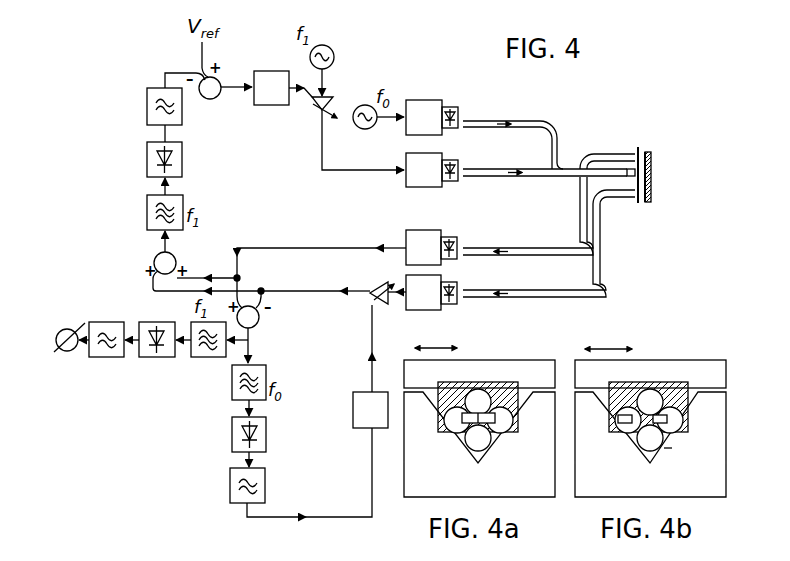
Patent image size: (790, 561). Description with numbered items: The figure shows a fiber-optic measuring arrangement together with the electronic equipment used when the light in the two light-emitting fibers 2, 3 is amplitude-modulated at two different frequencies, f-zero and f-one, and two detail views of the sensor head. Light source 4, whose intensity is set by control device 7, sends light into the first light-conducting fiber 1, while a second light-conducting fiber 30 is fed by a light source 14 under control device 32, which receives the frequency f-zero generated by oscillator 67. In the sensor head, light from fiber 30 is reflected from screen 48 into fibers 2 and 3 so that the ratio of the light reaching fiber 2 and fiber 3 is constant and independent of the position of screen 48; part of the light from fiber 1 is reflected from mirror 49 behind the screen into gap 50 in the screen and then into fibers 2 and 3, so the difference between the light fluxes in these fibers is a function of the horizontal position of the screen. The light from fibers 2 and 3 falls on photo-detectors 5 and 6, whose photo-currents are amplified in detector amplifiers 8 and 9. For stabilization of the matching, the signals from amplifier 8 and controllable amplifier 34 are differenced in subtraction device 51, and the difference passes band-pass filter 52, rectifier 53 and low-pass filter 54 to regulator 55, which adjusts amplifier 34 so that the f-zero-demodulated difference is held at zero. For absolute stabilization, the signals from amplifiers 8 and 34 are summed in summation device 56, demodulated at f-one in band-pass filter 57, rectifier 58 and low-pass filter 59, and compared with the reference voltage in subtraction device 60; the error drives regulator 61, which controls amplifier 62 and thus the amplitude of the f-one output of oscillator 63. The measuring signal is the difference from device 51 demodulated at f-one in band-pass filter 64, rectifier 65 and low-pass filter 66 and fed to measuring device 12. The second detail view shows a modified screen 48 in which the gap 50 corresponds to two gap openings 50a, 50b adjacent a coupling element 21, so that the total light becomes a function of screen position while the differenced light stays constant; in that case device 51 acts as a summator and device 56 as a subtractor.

In FIG. 4, the first light-conducting fiber 1 is at (527, 168).
In FIG. 4a, the first light-conducting fiber 1 is at (472, 450).
In FIG. 4b, the first light-conducting fiber 1 is at (645, 450).
In FIG. 4, the light-emitting fiber 2 is at (519, 247).
In FIG. 4a, the light-emitting fiber 2 is at (502, 430).
In FIG. 4b, the light-emitting fiber 2 is at (673, 430).
In FIG. 4, the light-emitting fiber 3 is at (540, 290).
In FIG. 4a, the light-emitting fiber 3 is at (452, 428).
In FIG. 4b, the light-emitting fiber 3 is at (630, 430).
In FIG. 4, the light source 4 is at (456, 167).
In FIG. 4, the photo-detector 5 is at (455, 240).
In FIG. 4, the photo-detector 6 is at (456, 286).
In FIG. 4, the control device 7 is at (407, 153).
In FIG. 4, the detector amplifier 8 is at (418, 230).
In FIG. 4, the detector amplifier 9 is at (420, 310).
In FIG. 4, the measuring device 12 is at (65, 351).
In FIG. 4, the light source 14 is at (456, 110).
In FIG. 4b, the coupling element 21 is at (666, 448).
In FIG. 4, the second light-conducting fiber 30 is at (506, 120).
In FIG. 4a, the second light-conducting fiber 30 is at (474, 390).
In FIG. 4b, the second light-conducting fiber 30 is at (646, 390).
In FIG. 4, the control device 32 is at (424, 100).
In FIG. 4, the controllable amplifier 34 is at (378, 283).
In FIG. 4, the screen 48 is at (637, 147).
In FIG. 4a, the screen 48 is at (505, 383).
In FIG. 4b, the screen 48 is at (686, 383).
In FIG. 4, the mirror 49 is at (652, 165).
In FIG. 4a, the gap 50 is at (496, 418).
In FIG. 4b, the gap opening 50a is at (614, 421).
In FIG. 4b, the gap opening 50b is at (684, 425).
In FIG. 4, the subtraction device 51 is at (260, 318).
In FIG. 4, the band-pass filter 52 is at (267, 370).
In FIG. 4, the rectifier 53 is at (266, 430).
In FIG. 4, the low-pass filter 54 is at (265, 482).
In FIG. 4, the regulator 55 is at (353, 400).
In FIG. 4, the summation device 56 is at (155, 260).
In FIG. 4, the band-pass filter 57 is at (147, 212).
In FIG. 4, the rectifier 58 is at (147, 160).
In FIG. 4, the low-pass filter 59 is at (147, 101).
In FIG. 4, the subtraction device 60 is at (210, 99).
In FIG. 4, the regulator 61 is at (260, 71).
In FIG. 4, the amplifier 62 is at (315, 104).
In FIG. 4, the oscillator 63 is at (331, 48).
In FIG. 4, the band-pass filter 64 is at (202, 357).
In FIG. 4, the rectifier 65 is at (157, 357).
In FIG. 4, the low-pass filter 66 is at (108, 357).
In FIG. 4, the oscillator 67 is at (356, 109).